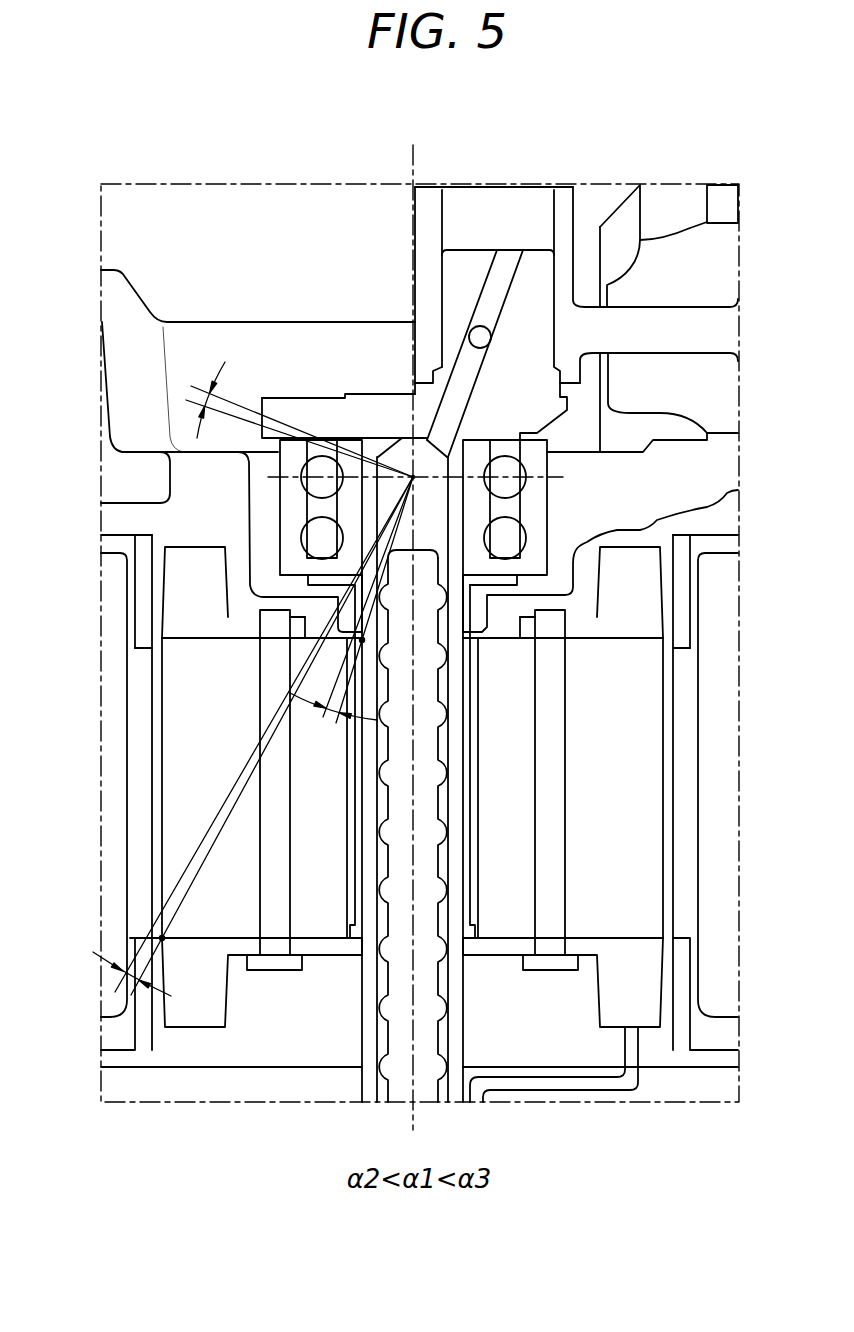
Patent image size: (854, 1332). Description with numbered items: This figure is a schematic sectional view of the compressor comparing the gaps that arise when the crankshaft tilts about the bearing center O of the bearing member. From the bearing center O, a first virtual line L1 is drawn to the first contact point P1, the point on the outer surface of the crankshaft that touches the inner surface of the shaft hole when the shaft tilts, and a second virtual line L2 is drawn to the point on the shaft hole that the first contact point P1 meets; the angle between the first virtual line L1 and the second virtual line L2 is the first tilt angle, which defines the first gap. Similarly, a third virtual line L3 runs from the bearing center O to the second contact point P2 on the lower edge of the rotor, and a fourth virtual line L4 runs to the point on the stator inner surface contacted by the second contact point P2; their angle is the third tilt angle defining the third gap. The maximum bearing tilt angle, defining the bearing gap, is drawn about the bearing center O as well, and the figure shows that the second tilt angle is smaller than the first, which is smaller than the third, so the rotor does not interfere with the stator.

The bearing center O is at (421, 465).
The first contact point P1 is at (362, 640).
The second contact point P2 is at (162, 938).
The first virtual line L1 is at (345, 688).
The second virtual line L2 is at (345, 663).
The third virtual line L3 is at (185, 898).
The fourth virtual line L4 is at (174, 890).